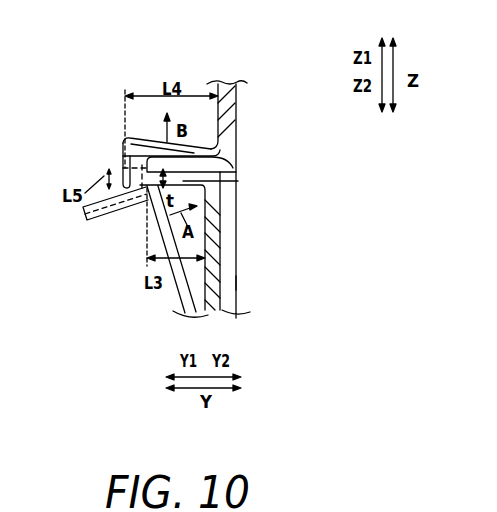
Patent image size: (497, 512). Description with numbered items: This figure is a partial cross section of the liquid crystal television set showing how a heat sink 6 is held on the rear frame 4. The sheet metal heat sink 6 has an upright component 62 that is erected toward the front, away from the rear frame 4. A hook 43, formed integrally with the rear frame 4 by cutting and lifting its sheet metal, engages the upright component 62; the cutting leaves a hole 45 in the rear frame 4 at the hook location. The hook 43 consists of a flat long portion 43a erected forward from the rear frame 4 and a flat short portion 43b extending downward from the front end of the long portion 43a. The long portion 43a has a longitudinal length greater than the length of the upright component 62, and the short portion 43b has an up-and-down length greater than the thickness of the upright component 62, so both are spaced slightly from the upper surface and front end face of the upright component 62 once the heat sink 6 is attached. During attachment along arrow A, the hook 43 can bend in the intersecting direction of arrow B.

The rear frame 4 is at (226, 83).
The hook 43 is at (130, 139).
The long portion 43a is at (131, 142).
The short portion 43b is at (123, 177).
The upright component 62 is at (113, 218).
The heat sink 6 is at (176, 297).
The hole 45 is at (229, 284).